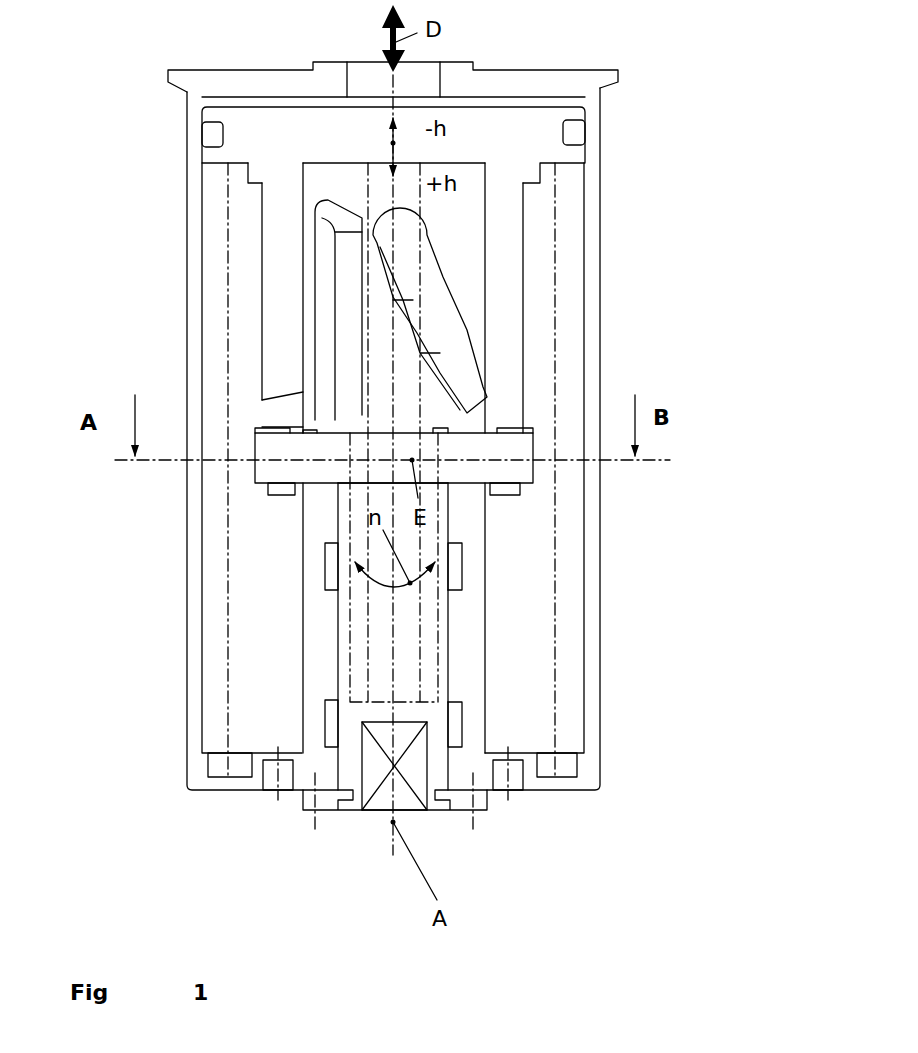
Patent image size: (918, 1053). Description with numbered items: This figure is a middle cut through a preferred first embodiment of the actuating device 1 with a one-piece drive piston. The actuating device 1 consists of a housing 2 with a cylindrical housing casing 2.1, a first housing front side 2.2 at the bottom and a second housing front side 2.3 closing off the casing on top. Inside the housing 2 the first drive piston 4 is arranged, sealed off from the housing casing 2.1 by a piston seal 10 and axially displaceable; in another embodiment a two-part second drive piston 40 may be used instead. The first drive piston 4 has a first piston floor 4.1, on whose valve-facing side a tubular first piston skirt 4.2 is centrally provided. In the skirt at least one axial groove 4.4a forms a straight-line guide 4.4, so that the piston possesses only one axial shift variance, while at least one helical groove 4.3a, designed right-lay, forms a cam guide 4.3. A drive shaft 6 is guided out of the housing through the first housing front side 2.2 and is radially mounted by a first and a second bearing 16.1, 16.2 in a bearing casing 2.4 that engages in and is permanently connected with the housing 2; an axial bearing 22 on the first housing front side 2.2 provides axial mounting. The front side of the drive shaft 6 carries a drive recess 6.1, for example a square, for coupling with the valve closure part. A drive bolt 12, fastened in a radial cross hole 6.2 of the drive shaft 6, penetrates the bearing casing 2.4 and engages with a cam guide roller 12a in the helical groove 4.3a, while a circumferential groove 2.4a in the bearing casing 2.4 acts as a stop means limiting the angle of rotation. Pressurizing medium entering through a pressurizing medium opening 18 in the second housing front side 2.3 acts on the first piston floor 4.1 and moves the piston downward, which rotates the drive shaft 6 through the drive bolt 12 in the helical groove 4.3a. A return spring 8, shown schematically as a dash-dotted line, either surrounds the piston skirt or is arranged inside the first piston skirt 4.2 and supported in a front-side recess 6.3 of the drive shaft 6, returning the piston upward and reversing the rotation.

The actuating device 1 is at (620, 812).
The housing 2 is at (616, 605).
The housing casing 2.1 is at (590, 560).
The first housing front side 2.2 is at (540, 783).
The second housing front side 2.3 is at (548, 80).
The bearing casing 2.4 is at (470, 637).
The circumferential groove 2.4a is at (470, 410).
The first drive piston 4 is at (253, 262).
The second drive piston 40 is at (255, 173).
The first piston floor 4.1 is at (255, 128).
The first piston skirt 4.2 is at (282, 230).
The cam guide 4.3 is at (428, 254).
The helical groove 4.3a is at (410, 323).
The straight-line guide 4.4 is at (327, 300).
The axial groove 4.4a is at (313, 372).
The drive shaft 6 is at (375, 715).
The drive recess 6.1 is at (362, 743).
The radial cross hole 6.2 is at (378, 481).
The front-side recess 6.3 is at (437, 657).
The return spring 8 is at (228, 733).
The piston seal 10 is at (575, 133).
The drive bolt 12 is at (512, 468).
The cam guide roller 12a is at (280, 485).
The first bearing 16.1 is at (455, 718).
The second bearing 16.2 is at (455, 567).
The pressurizing medium opening 18 is at (349, 81).
The axial bearing 22 is at (337, 821).